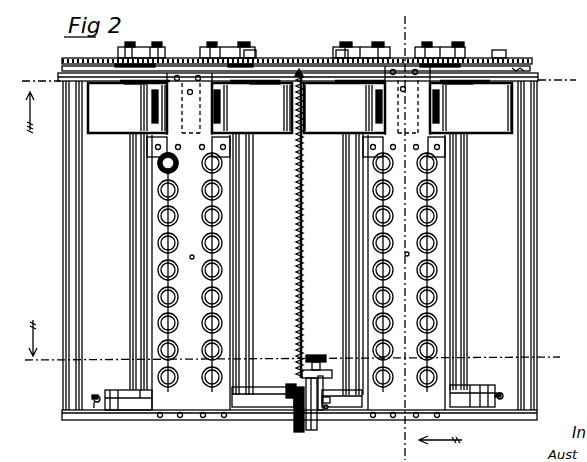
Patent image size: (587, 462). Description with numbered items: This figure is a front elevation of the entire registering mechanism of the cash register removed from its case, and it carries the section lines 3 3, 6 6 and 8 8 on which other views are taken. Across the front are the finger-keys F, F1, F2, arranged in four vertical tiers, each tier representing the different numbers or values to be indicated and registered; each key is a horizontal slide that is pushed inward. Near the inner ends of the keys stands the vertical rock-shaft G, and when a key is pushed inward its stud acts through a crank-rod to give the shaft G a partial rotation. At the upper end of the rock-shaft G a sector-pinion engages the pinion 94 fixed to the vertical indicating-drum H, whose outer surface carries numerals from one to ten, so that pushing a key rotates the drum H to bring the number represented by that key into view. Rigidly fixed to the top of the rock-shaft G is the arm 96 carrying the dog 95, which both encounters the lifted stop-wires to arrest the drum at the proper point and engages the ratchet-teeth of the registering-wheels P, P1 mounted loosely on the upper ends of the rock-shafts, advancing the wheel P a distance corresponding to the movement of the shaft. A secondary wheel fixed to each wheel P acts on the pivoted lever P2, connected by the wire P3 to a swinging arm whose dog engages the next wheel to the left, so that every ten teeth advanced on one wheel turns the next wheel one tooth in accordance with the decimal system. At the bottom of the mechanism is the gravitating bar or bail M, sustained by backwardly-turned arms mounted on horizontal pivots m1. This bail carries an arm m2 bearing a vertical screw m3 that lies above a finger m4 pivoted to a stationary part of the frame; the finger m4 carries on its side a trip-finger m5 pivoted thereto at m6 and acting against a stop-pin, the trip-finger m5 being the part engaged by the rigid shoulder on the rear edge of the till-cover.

The registering-wheel P is at (498, 50).
The registering-wheel P1 is at (340, 47).
The pivoted lever P2 is at (250, 49).
The wire P3 is at (110, 58).
The pinion 94 is at (140, 80).
The dog 95 is at (170, 48).
The arm 96 is at (145, 52).
The section line 6 6 is at (404, 230).
The section line 8 8 is at (292, 258).
The section line 3 3 is at (292, 358).
The indicating-drum H is at (150, 108).
The finger-key F is at (160, 163).
The finger-key F1 is at (477, 199).
The finger-key F2 is at (485, 225).
The rock-shaft G is at (130, 314).
The gravitating bar or bail M is at (262, 398).
The pivot m1 is at (97, 396).
The arm m2 is at (330, 370).
The vertical screw m3 is at (317, 356).
The finger m4 is at (321, 415).
The trip-finger m5 is at (289, 433).
The pivot m6 is at (331, 394).